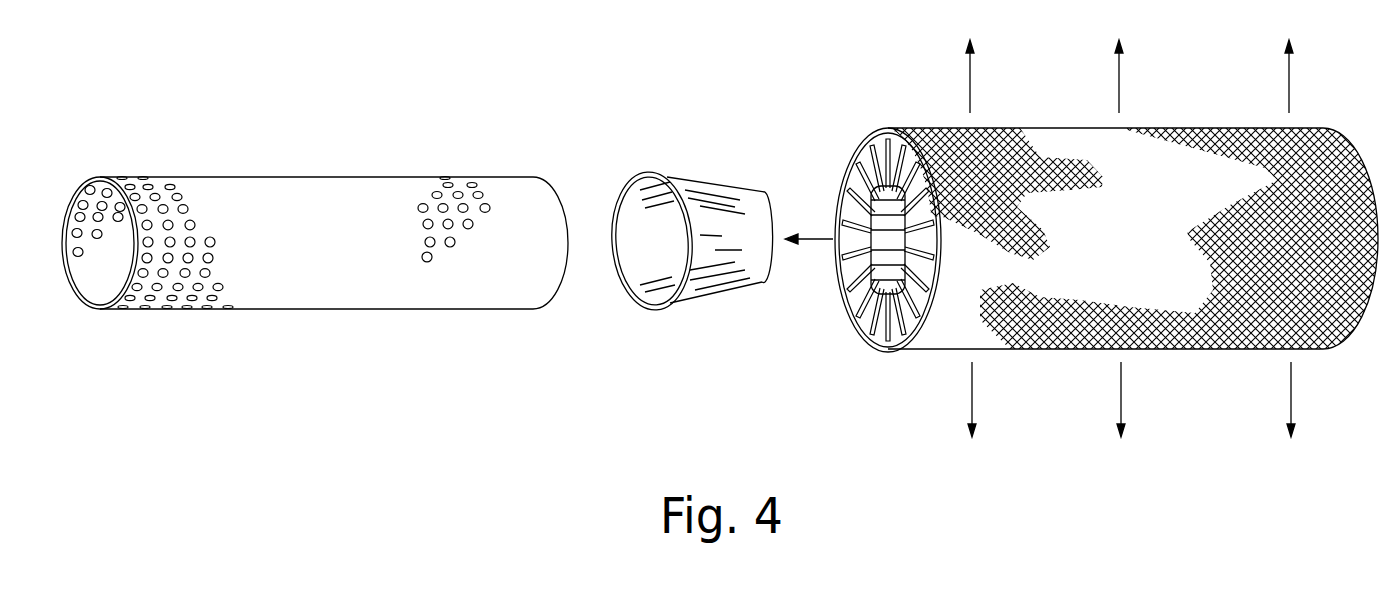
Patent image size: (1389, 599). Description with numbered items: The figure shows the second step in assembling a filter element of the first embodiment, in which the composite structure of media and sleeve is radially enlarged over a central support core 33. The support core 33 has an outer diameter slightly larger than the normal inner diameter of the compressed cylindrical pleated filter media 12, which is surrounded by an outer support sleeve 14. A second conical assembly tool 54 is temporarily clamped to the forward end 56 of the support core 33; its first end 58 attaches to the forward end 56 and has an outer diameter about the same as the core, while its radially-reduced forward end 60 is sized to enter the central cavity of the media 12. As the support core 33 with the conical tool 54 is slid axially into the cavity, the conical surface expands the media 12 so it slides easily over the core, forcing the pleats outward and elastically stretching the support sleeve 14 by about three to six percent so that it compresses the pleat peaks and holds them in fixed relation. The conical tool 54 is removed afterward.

The cylindrical pleated filter media 12 is at (858, 145).
The outer support sleeve 14 is at (1118, 267).
The central support core 33 is at (308, 190).
The second conical assembly tool 54 is at (695, 180).
The forward end of the support core 56 is at (548, 178).
The first end of the conical tool 58 is at (632, 180).
The radially-reduced forward end of the conical tool 60 is at (768, 283).